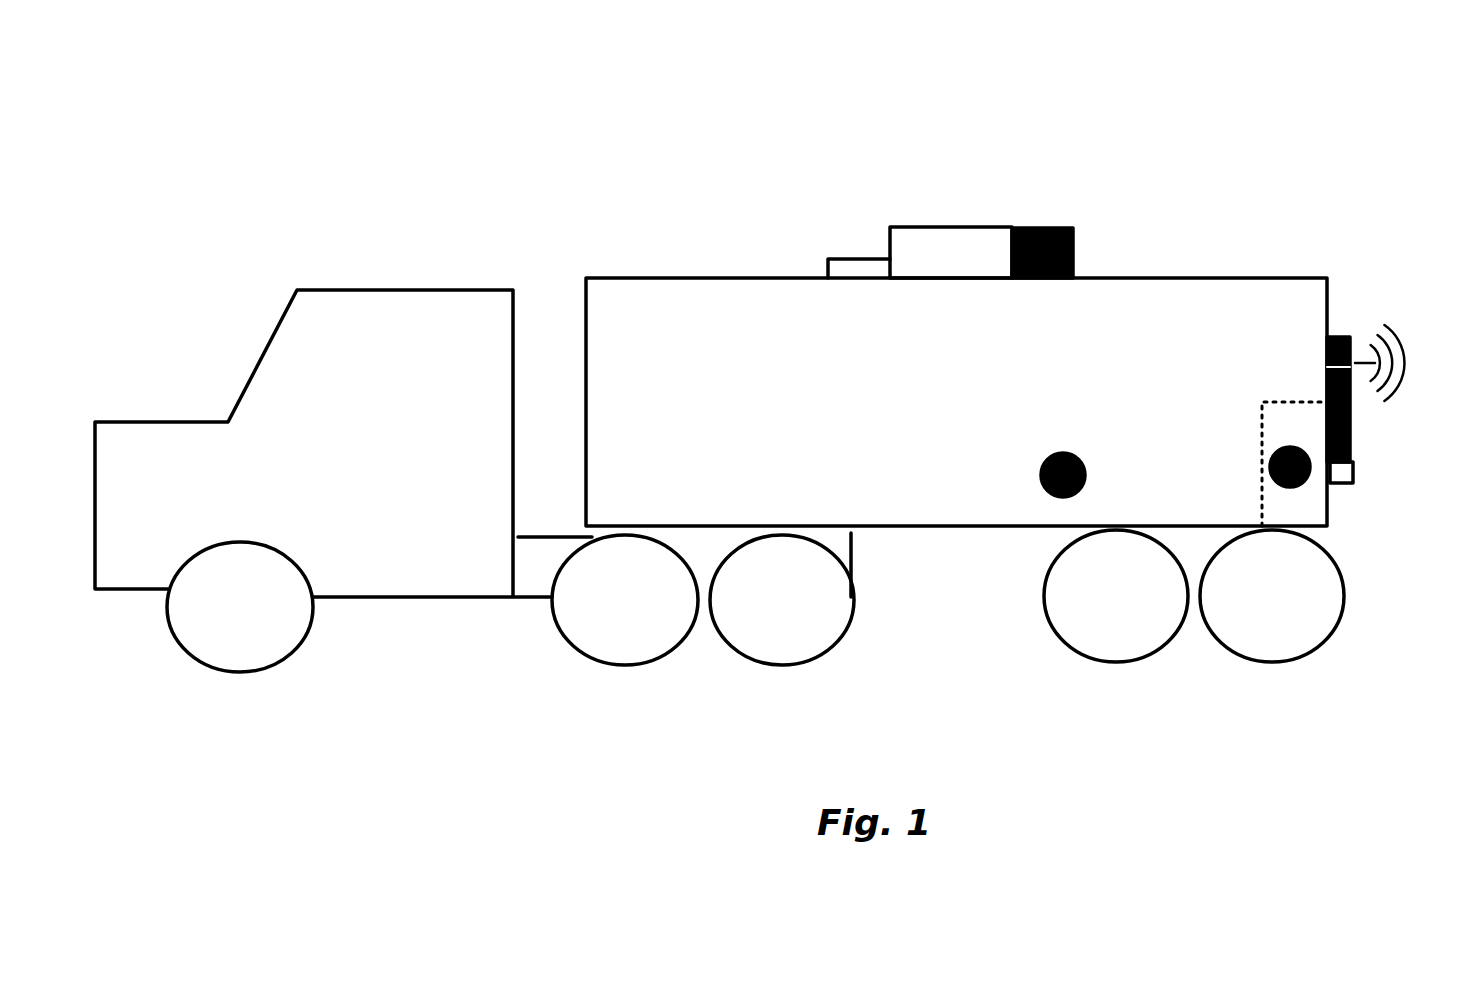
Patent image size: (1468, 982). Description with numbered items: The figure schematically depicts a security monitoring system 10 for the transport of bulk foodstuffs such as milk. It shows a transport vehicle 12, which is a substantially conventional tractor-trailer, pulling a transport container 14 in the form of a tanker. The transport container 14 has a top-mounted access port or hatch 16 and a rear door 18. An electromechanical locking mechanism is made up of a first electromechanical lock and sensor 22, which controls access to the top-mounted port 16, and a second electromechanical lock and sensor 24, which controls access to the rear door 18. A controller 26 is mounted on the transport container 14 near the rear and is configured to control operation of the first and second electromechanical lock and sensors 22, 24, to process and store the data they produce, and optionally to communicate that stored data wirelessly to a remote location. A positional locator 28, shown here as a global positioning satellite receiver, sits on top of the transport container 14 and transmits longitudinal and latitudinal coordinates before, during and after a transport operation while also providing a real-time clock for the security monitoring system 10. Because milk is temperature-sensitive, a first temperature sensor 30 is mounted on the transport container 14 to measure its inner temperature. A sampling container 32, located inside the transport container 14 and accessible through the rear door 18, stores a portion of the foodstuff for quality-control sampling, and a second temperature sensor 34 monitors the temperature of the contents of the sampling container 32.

The security monitoring system 10 is at (542, 133).
The transport vehicle 12 is at (400, 393).
The transport container 14 is at (682, 360).
The top-mounted access port 16 is at (937, 226).
The rear door 18 is at (1343, 291).
The first electromechanical lock and sensor 22 is at (1040, 228).
The second electromechanical lock and sensor 24 is at (1353, 471).
The controller 26 is at (1350, 418).
The positional locator 28 is at (842, 258).
The first temperature sensor 30 is at (1042, 463).
The sampling container 32 is at (1258, 410).
The second temperature sensor 34 is at (1270, 465).